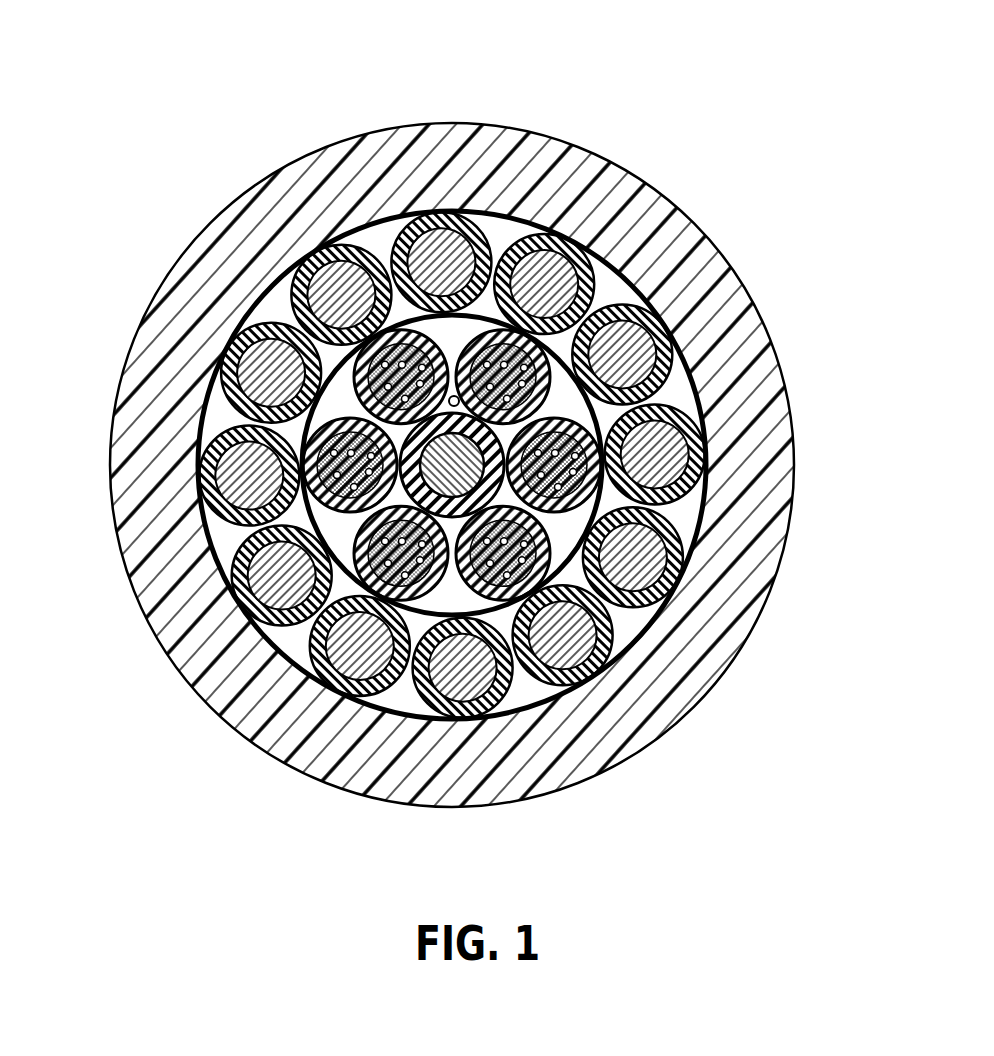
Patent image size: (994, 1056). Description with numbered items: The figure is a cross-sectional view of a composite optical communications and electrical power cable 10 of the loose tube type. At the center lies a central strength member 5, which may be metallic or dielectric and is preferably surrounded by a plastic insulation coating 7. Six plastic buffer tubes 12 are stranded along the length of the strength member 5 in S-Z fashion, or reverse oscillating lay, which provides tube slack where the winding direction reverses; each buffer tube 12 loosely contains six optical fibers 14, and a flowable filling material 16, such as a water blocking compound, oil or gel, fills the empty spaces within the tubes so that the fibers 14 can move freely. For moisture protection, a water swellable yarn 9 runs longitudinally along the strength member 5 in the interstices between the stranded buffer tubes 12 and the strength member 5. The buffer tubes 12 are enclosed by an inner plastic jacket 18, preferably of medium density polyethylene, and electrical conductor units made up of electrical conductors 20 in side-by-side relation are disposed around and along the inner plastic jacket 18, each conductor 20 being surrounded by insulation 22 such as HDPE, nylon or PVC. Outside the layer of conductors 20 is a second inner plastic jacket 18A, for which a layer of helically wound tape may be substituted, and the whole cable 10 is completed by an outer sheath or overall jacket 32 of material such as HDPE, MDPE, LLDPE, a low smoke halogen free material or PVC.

The composite optical communications and electrical power cable 10 is at (305, 105).
The central strength member 5 is at (581, 512).
The plastic insulation coating 7 is at (438, 483).
The water swellable yarn 9 is at (458, 397).
The buffer tubes 12 is at (543, 377).
The optical fibers 14 is at (533, 563).
The flowable filling material 16 is at (572, 503).
The inner plastic jacket 18 is at (620, 273).
The second inner plastic jacket 18A is at (713, 488).
The electrical conductors 20 is at (410, 253).
The insulation 22 is at (226, 438).
The overall jacket 32 is at (745, 620).